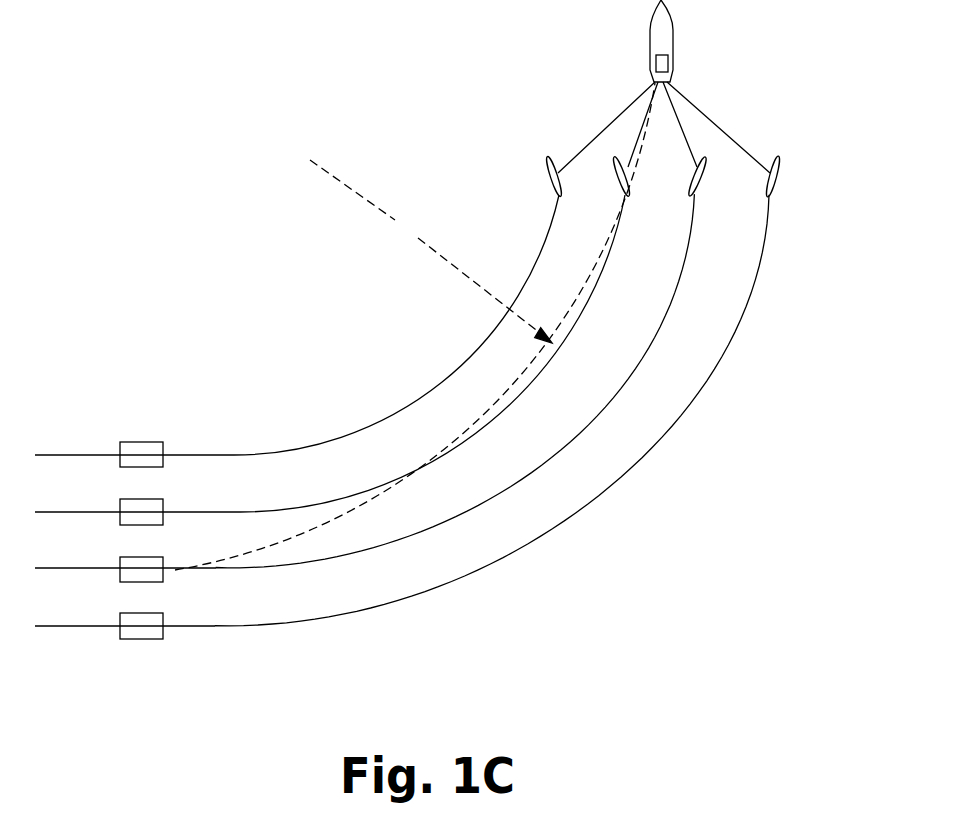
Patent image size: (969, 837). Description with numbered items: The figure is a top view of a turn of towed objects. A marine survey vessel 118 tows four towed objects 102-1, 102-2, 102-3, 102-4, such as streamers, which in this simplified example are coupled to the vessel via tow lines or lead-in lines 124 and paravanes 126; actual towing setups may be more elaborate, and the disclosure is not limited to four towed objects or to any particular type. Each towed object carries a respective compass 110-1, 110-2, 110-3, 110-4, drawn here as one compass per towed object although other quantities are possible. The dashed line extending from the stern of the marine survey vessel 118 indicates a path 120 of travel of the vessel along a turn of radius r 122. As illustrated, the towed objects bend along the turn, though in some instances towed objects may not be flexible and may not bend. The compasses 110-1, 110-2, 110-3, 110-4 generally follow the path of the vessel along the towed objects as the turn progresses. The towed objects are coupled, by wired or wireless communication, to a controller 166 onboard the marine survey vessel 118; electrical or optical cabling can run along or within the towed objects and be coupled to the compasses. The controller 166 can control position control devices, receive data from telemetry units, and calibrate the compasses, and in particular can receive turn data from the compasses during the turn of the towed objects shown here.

The marine survey vessel 118 is at (668, 28).
The controller 166 is at (655, 61).
The tow lines or lead-in lines 124 is at (706, 107).
The paravanes 126 is at (777, 173).
The towed object 102-1 is at (543, 250).
The towed object 102-2 is at (608, 280).
The towed object 102-3 is at (680, 301).
The towed object 102-4 is at (748, 309).
The compass 110-1 is at (140, 443).
The compass 110-2 is at (140, 500).
The compass 110-3 is at (140, 557).
The compass 110-4 is at (140, 614).
The path 120 is at (511, 390).
The radius r 122 is at (406, 216).